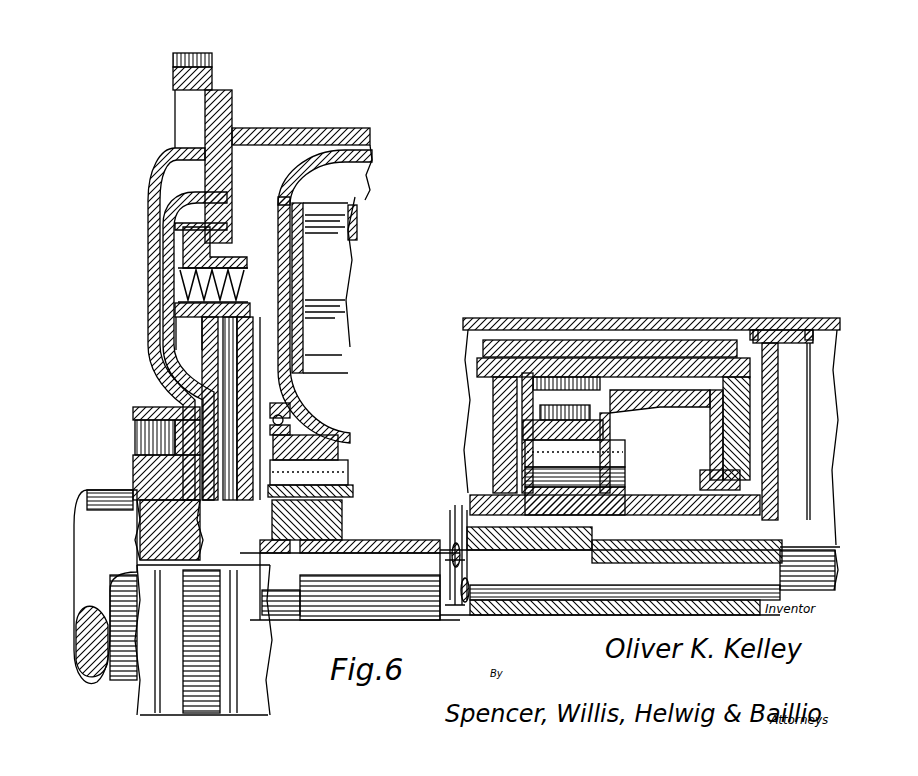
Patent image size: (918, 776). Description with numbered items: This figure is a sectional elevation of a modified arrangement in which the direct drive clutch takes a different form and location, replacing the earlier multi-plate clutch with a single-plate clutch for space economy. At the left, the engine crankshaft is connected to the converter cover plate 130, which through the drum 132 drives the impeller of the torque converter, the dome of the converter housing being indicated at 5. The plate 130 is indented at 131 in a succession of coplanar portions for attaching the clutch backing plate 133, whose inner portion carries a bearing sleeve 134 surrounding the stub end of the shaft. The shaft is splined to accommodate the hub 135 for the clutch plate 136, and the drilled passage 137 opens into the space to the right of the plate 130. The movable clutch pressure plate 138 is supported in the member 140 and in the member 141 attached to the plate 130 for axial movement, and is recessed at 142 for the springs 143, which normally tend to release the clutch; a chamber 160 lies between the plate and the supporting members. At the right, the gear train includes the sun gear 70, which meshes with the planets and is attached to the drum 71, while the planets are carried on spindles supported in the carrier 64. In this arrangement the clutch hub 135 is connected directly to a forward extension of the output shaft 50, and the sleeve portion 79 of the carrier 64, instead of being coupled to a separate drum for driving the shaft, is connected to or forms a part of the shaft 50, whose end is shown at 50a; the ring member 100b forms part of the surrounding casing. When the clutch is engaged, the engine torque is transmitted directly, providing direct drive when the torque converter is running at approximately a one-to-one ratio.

The bell housing dome 5 is at (305, 180).
The output shaft 50 is at (780, 545).
The shaft end 50a is at (450, 605).
The carrier 64 is at (523, 427).
The sun gear 70 is at (665, 495).
The drum 71 is at (616, 345).
The sleeve portion 79 is at (624, 571).
The ring member 100b is at (776, 332).
The converter cover plate 130 is at (165, 300).
The indented portion 131 is at (195, 470).
The drum 132 is at (310, 135).
The clutch backing plate 133 is at (222, 365).
The bearing sleeve 134 is at (200, 568).
The hub 135 is at (310, 600).
The clutch plate 136 is at (202, 385).
The drilled passage 137 is at (450, 545).
The clutch pressure plate 138 is at (250, 375).
The supporting member 140 is at (228, 202).
The supporting member 141 is at (190, 332).
The recess 142 is at (246, 282).
The spring 143 is at (228, 255).
The chamber 160 is at (190, 362).